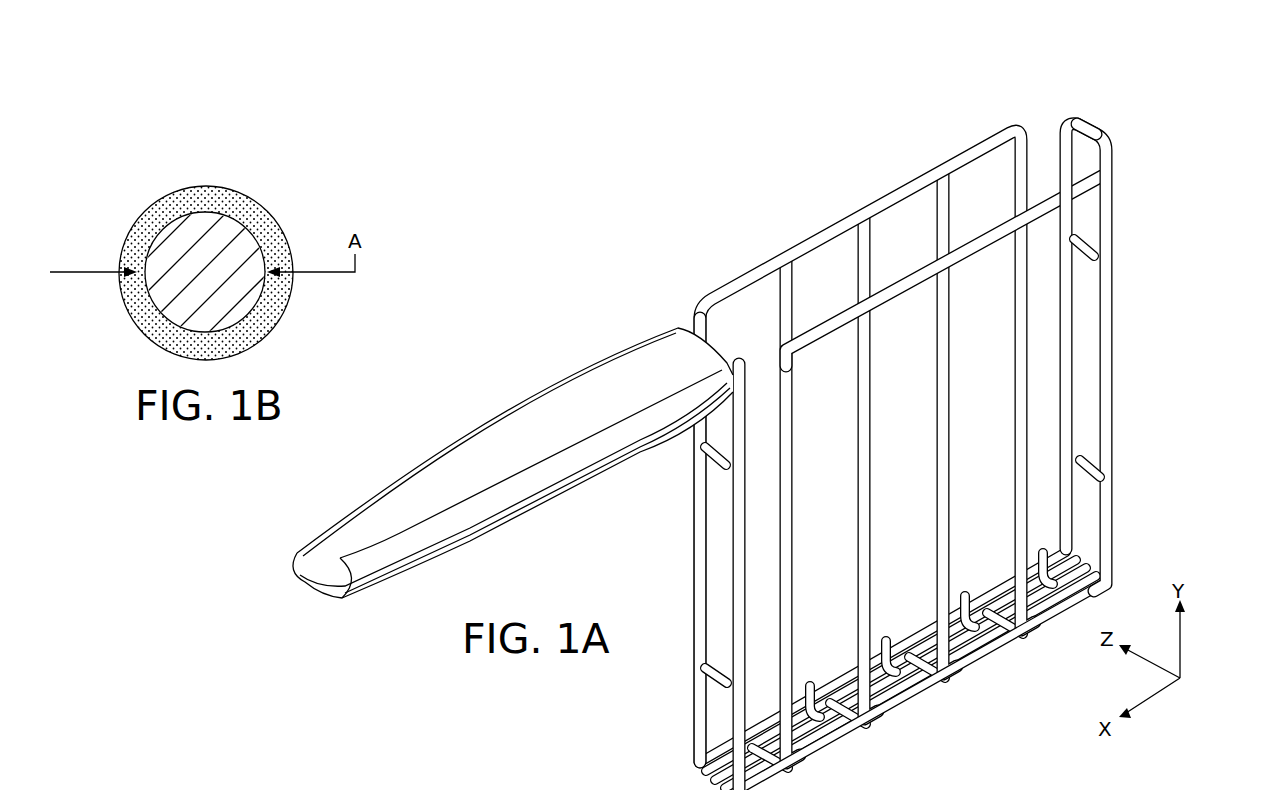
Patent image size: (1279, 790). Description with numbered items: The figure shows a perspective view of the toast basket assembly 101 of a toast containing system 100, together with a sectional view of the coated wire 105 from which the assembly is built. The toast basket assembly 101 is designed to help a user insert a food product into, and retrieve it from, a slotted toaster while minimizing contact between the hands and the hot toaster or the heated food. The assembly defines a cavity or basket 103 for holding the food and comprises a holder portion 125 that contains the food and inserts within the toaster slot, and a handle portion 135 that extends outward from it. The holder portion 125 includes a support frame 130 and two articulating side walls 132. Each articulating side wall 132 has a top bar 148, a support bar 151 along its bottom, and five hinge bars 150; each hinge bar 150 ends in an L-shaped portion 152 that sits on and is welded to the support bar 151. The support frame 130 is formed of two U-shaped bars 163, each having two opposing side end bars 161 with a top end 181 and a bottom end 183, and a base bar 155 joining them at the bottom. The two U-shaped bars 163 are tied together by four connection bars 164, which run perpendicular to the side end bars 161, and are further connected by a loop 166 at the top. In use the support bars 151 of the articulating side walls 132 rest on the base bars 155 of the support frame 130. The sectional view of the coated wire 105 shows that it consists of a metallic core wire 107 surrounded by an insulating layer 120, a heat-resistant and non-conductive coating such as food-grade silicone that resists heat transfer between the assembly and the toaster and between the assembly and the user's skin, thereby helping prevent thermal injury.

In FIG. 1A, the toast containing system 100 is at (626, 311).
In FIG. 1A, the toast basket assembly 101 is at (935, 418).
In FIG. 1A, the cavity or basket 103 is at (1044, 130).
In FIG. 1B, the coated wire 105 is at (263, 212).
In FIG. 1B, the core wire 107 is at (212, 213).
In FIG. 1B, the insulating layer 120 is at (273, 303).
In FIG. 1A, the holder portion 125 is at (763, 265).
In FIG. 1A, the support frame 130 is at (1158, 145).
In FIG. 1A, the articulating side wall 132 is at (917, 182).
In FIG. 1A, the handle portion 135 is at (588, 386).
In FIG. 1A, the top bar 148 is at (827, 230).
In FIG. 1A, the hinge bar 150 is at (792, 301).
In FIG. 1A, the support bar 151 is at (847, 672).
In FIG. 1A, the L-shaped portion 152 is at (1008, 627).
In FIG. 1A, the base bar 155 is at (927, 645).
In FIG. 1A, the side end bar 161 is at (1112, 352).
In FIG. 1A, the U-shaped bar 163 is at (1113, 319).
In FIG. 1A, the connection bar 164 is at (1087, 249).
In FIG. 1A, the loop 166 is at (1126, 154).
In FIG. 1A, the top end 181 is at (1126, 178).
In FIG. 1A, the bottom end 183 is at (1130, 552).